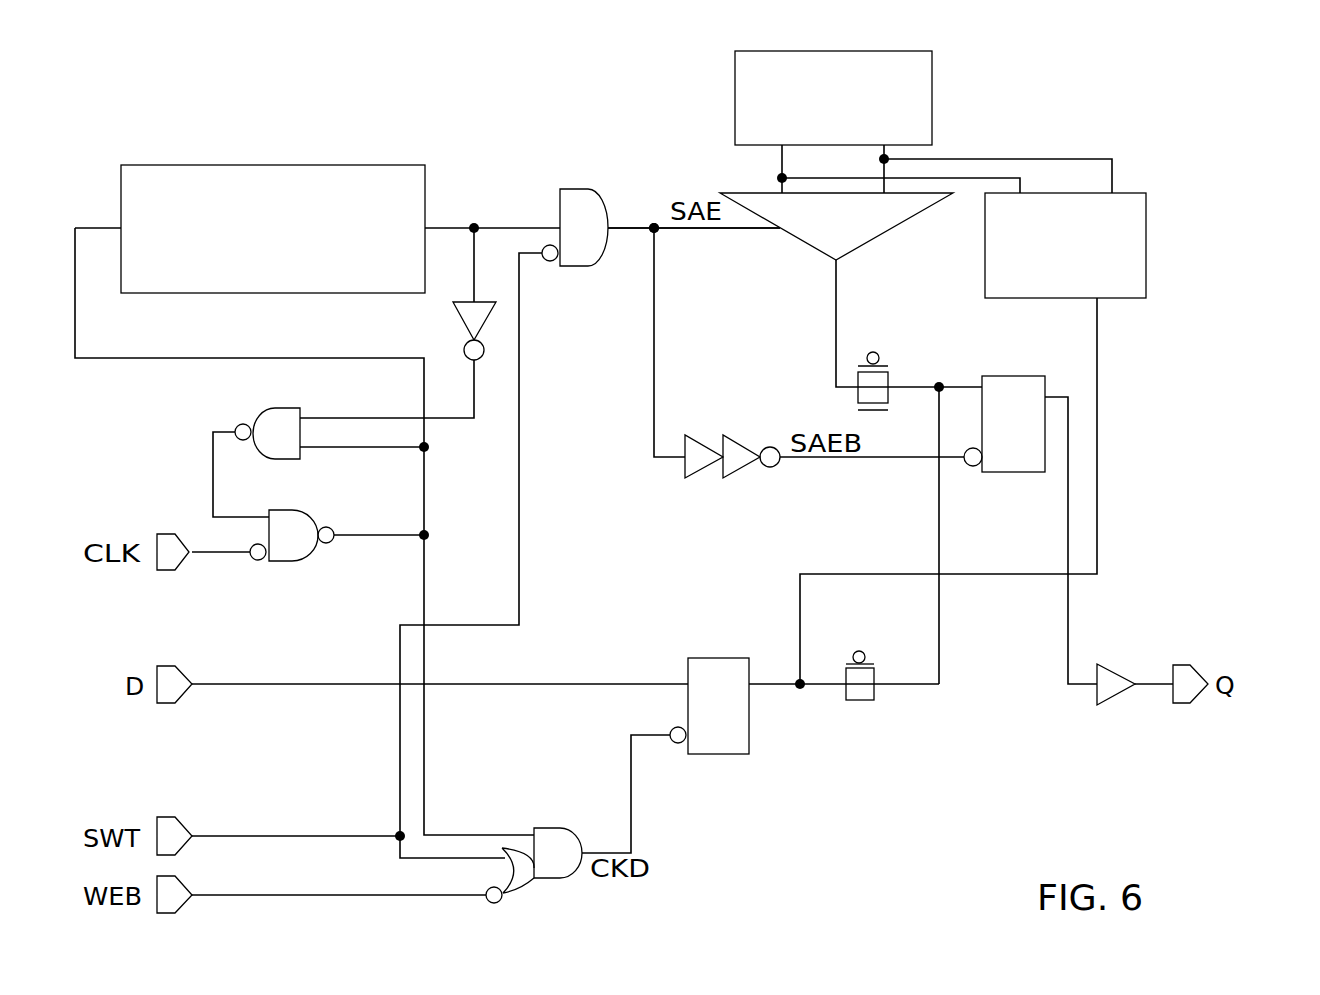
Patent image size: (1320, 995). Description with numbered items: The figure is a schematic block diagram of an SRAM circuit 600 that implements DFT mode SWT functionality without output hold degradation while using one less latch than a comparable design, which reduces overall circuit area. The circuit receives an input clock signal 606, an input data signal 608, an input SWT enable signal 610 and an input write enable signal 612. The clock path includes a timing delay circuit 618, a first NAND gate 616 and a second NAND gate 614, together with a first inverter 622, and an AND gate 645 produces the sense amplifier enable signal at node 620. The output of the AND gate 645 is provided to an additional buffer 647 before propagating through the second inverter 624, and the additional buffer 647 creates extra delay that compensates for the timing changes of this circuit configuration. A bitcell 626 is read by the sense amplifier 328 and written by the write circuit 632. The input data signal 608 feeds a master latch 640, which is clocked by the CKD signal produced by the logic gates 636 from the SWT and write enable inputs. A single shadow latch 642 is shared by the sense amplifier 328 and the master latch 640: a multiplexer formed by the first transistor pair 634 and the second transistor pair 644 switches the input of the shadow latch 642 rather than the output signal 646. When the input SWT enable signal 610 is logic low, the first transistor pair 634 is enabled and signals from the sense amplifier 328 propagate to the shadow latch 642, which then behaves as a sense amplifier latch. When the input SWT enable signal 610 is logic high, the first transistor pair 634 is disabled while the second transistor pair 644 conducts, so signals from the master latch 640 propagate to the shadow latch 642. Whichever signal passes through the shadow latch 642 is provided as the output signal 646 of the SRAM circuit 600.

The SRAM circuit 600 is at (1170, 137).
The input clock signal 606 is at (165, 532).
The input data signal 608 is at (163, 665).
The input SWT enable signal 610 is at (163, 816).
The input write enable signal 612 is at (163, 915).
The second NAND gate 614 is at (262, 412).
The first NAND gate 616 is at (285, 510).
The timing delay circuit 618 is at (272, 164).
The sense amplifier enable node SAE 620 is at (654, 226).
The first inverter 622 is at (453, 316).
The second inverter 624 is at (742, 472).
The bitcell 626 is at (933, 100).
The sense amplifier 328 is at (877, 237).
The write circuit 632 is at (1146, 245).
The first transistor pair 634 is at (883, 366).
The logic gates 636 is at (548, 880).
The master latch 640 is at (720, 658).
The shadow latch 642 is at (1013, 376).
The second transistor pair 644 is at (868, 662).
The AND gate 645 is at (576, 189).
The output signal 646 is at (1180, 703).
The additional buffer 647 is at (703, 435).